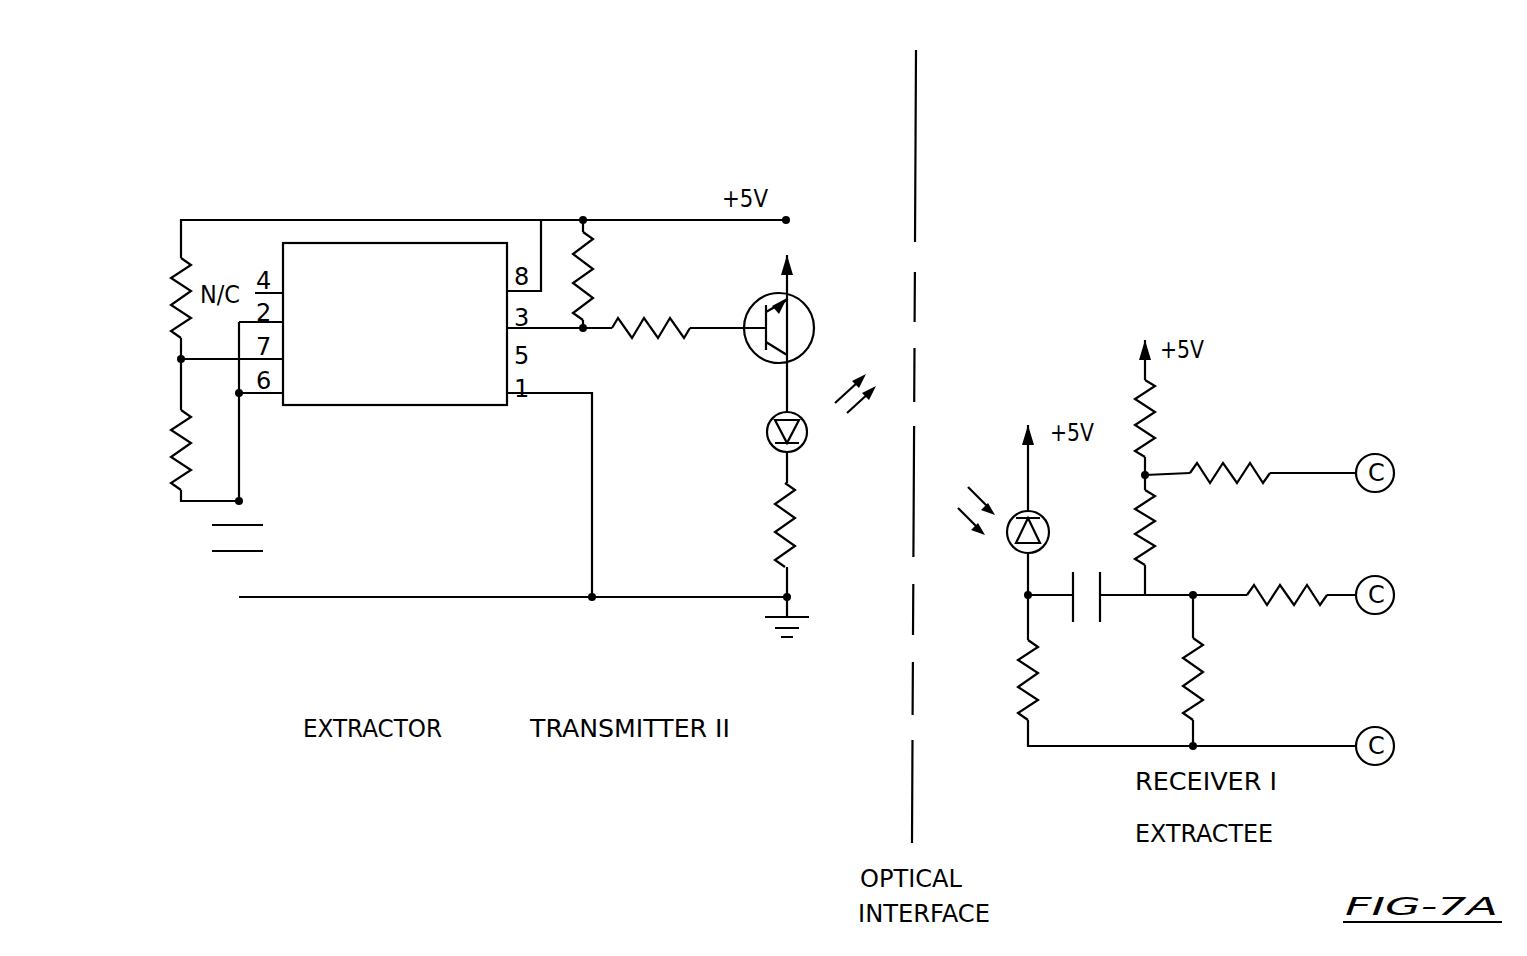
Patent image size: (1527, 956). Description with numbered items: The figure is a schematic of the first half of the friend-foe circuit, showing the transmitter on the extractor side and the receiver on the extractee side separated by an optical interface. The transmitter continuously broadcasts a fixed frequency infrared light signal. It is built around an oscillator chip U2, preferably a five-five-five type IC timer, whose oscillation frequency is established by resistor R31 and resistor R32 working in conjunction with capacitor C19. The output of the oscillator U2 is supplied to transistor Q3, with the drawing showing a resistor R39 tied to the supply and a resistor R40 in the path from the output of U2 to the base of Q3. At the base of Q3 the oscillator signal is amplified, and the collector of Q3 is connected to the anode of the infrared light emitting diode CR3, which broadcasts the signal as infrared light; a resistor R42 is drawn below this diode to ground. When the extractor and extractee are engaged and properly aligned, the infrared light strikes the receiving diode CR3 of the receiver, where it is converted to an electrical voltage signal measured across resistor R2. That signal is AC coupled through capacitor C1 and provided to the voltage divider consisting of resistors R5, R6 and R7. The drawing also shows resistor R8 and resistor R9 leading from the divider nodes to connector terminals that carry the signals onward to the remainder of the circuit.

The oscillator chip U2 is at (395, 324).
The resistor R31 is at (205, 294).
The resistor R32 is at (156, 450).
The capacitor C19 is at (266, 530).
The resistor R39 is at (608, 276).
The resistor R40 is at (651, 314).
The transistor Q3 is at (774, 333).
The infrared light emitting diode / infrared receiving diode CR3 is at (932, 484).
The resistor R42 is at (812, 540).
The resistor R5 is at (1166, 418).
The resistor R6 is at (1165, 527).
The resistor R8 is at (1230, 458).
The resistor R9 is at (1287, 581).
The capacitor C1 is at (1087, 581).
The resistor R2 is at (1049, 657).
The resistor R7 is at (1213, 679).